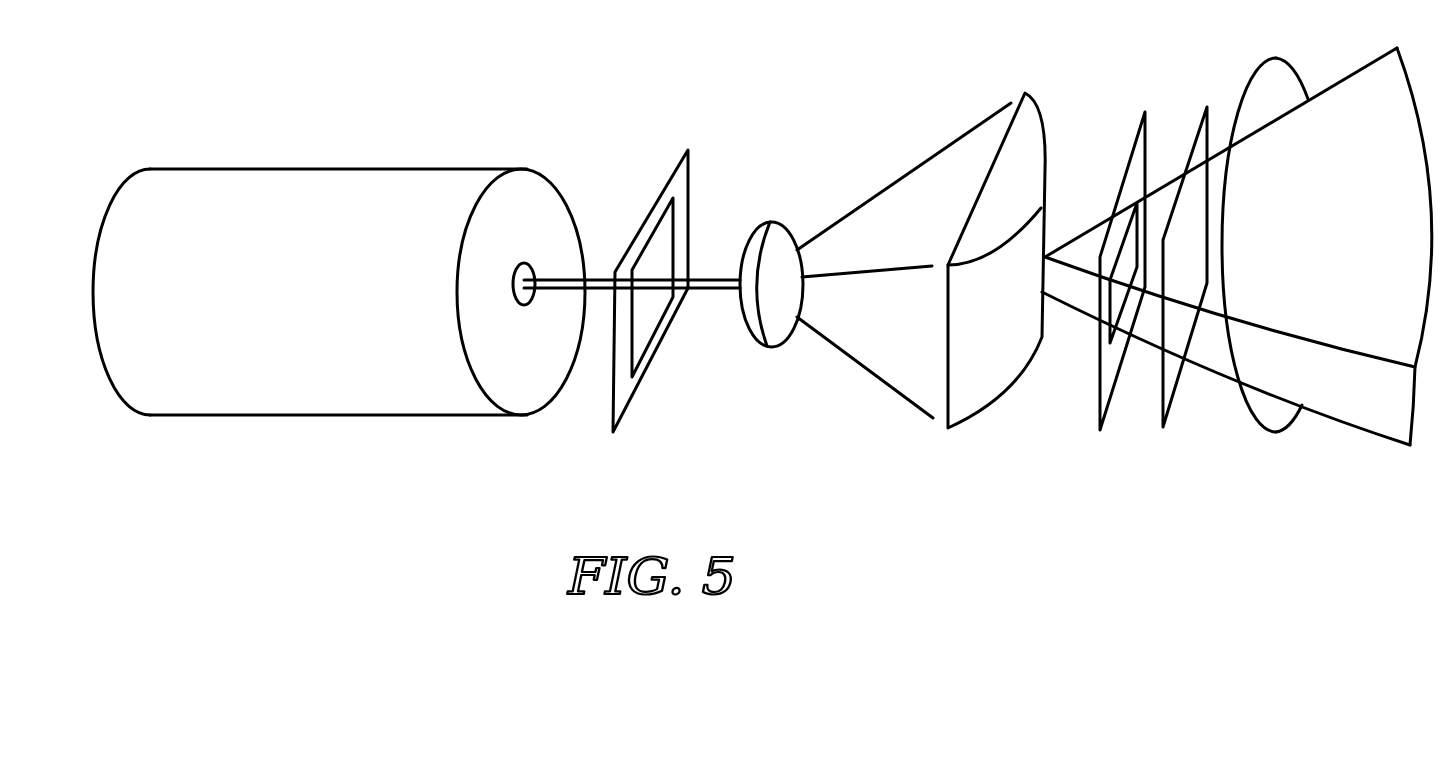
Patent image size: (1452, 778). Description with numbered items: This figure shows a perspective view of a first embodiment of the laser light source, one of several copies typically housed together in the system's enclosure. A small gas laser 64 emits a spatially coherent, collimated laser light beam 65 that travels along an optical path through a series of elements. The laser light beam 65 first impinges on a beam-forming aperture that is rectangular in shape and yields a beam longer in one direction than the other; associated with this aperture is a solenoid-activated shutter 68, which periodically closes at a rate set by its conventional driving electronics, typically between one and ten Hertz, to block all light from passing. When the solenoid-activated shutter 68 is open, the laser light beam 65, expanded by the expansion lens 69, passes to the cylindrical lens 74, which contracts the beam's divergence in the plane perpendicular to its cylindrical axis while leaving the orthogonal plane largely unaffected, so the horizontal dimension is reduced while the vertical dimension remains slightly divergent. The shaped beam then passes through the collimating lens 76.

The gas laser 64 is at (359, 169).
The laser light beam 65 is at (604, 278).
The solenoid-activated shutter 68 is at (684, 160).
The expansion lens 69 is at (770, 223).
The cylindrical lens 74 is at (1040, 110).
The collimating lens 76 is at (1137, 208).